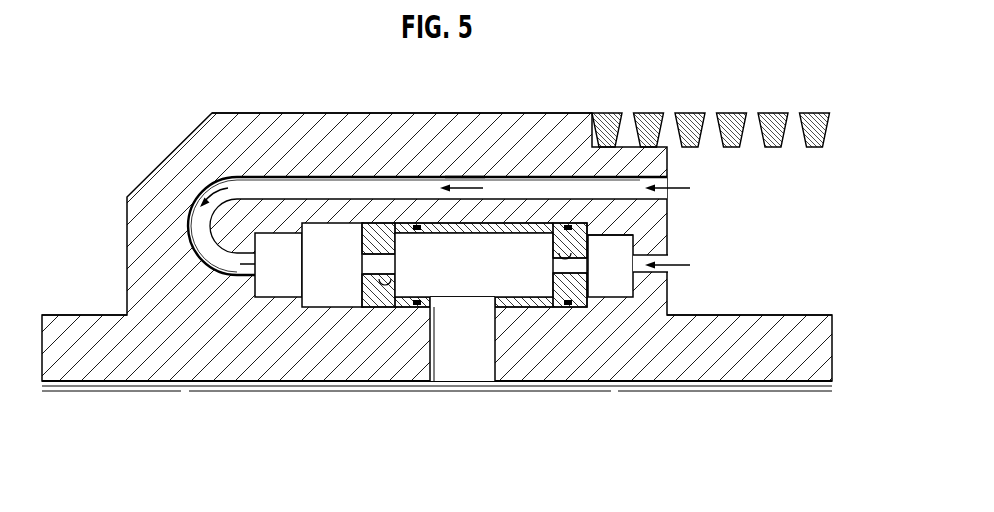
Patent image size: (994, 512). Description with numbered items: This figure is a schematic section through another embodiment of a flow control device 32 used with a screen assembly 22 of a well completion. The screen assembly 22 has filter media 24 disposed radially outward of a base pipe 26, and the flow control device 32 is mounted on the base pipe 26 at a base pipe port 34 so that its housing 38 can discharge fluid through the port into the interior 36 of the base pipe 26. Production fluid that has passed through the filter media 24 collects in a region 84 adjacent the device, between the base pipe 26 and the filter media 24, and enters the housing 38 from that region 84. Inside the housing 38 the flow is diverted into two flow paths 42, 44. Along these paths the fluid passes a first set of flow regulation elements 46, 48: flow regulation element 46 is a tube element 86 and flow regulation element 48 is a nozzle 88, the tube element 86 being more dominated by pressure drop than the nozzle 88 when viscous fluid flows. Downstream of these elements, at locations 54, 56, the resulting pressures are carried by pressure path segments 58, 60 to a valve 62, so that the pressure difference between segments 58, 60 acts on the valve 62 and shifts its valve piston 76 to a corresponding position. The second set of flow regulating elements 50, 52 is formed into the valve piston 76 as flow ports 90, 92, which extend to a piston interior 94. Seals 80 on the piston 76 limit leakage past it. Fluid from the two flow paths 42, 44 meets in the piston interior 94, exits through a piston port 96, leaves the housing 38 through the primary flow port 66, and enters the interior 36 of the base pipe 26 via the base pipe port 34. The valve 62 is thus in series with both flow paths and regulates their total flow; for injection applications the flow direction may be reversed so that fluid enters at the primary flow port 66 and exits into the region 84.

The screen assembly 22 is at (771, 91).
The filter media 24 is at (688, 113).
The base pipe 26 is at (92, 315).
The flow control device 32 is at (158, 130).
The base pipe port 34 is at (497, 372).
The interior of the base pipe 36 is at (122, 431).
The housing 38 is at (293, 113).
The first flow path 42 is at (655, 177).
The second flow path 44 is at (662, 255).
The first flow regulation element 46 is at (432, 160).
The second flow regulation element 48 is at (683, 275).
The third flow regulating element 50 is at (376, 235).
The fourth flow regulating element 52 is at (576, 291).
The pressure location 54 is at (280, 286).
The pressure location 56 is at (613, 286).
The pressure path segment 58 is at (325, 288).
The pressure path segment 60 is at (618, 238).
The valve 62 is at (506, 211).
The primary flow port 66 is at (417, 308).
The valve piston 76 is at (362, 292).
The seals 80 is at (440, 320).
The region 84 is at (762, 242).
The tube element 86 is at (463, 177).
The nozzle 88 is at (657, 280).
The flow port 90 is at (388, 284).
The flow port 92 is at (563, 252).
The piston interior 94 is at (461, 272).
The piston port 96 is at (483, 297).